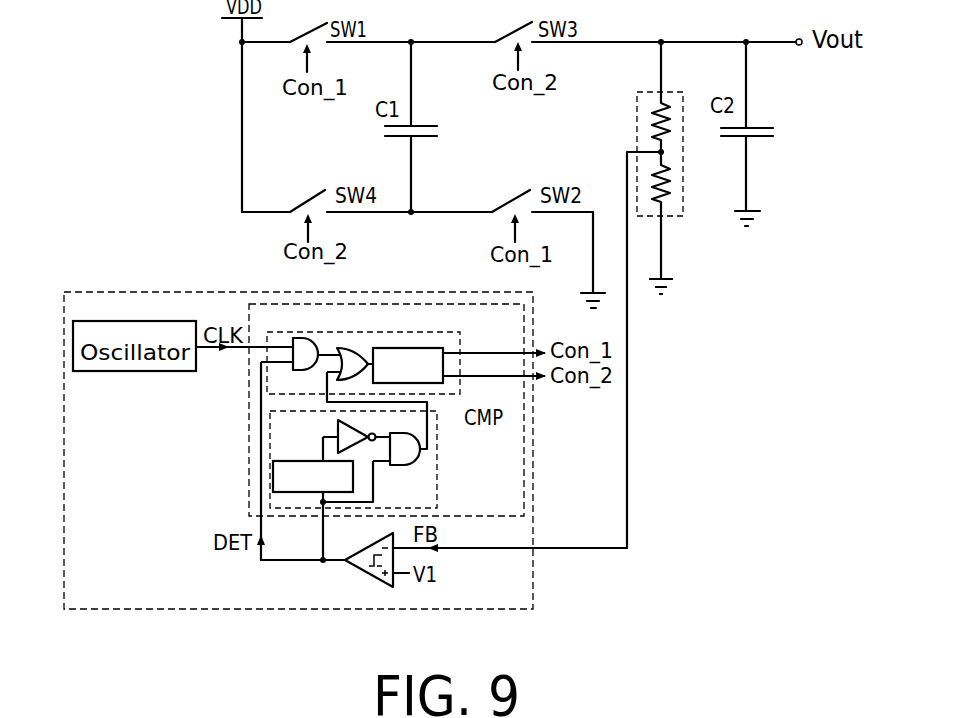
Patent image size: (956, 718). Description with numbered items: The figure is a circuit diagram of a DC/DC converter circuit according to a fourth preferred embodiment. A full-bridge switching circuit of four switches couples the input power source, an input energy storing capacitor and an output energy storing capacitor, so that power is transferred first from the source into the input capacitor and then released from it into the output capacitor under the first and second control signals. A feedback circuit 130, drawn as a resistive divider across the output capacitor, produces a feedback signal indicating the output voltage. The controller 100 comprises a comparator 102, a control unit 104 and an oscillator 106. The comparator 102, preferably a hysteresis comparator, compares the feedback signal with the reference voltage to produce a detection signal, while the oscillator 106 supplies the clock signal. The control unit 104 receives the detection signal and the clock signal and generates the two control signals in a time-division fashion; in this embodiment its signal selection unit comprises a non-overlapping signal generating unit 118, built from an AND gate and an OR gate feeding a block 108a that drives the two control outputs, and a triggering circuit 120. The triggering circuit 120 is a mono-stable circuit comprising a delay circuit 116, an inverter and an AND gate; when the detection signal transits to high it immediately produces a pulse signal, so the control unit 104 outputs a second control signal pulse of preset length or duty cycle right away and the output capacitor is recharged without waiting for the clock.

The controller 100 is at (70, 498).
The comparator 102 is at (357, 562).
The control unit 104 is at (253, 436).
The oscillator 106 is at (137, 371).
The switch driving unit 108a is at (459, 365).
The delay circuit 116 is at (313, 476).
The non-overlapping signal generating unit 118 is at (437, 335).
The triggering circuit 120 is at (437, 481).
The feedback circuit 130 is at (640, 124).